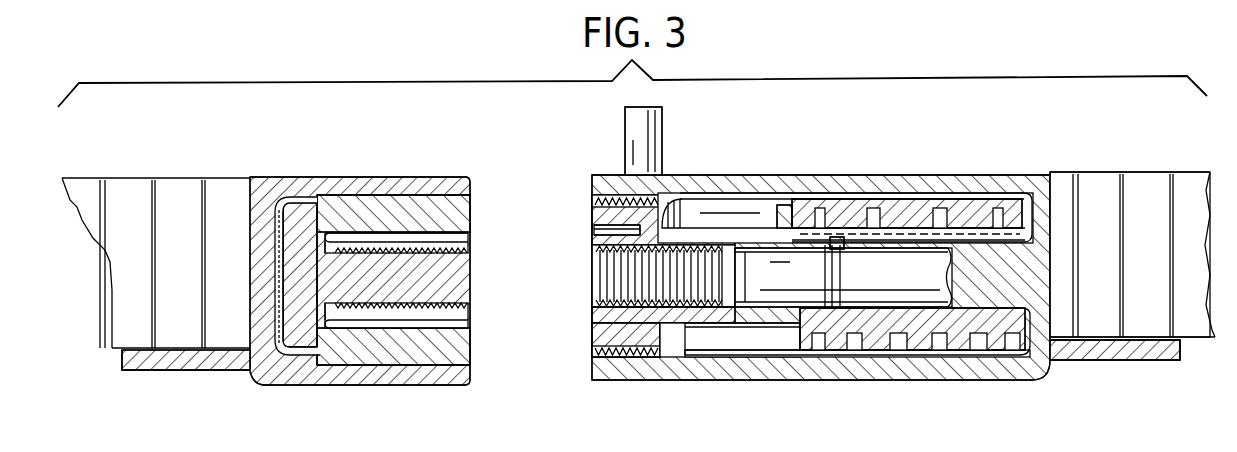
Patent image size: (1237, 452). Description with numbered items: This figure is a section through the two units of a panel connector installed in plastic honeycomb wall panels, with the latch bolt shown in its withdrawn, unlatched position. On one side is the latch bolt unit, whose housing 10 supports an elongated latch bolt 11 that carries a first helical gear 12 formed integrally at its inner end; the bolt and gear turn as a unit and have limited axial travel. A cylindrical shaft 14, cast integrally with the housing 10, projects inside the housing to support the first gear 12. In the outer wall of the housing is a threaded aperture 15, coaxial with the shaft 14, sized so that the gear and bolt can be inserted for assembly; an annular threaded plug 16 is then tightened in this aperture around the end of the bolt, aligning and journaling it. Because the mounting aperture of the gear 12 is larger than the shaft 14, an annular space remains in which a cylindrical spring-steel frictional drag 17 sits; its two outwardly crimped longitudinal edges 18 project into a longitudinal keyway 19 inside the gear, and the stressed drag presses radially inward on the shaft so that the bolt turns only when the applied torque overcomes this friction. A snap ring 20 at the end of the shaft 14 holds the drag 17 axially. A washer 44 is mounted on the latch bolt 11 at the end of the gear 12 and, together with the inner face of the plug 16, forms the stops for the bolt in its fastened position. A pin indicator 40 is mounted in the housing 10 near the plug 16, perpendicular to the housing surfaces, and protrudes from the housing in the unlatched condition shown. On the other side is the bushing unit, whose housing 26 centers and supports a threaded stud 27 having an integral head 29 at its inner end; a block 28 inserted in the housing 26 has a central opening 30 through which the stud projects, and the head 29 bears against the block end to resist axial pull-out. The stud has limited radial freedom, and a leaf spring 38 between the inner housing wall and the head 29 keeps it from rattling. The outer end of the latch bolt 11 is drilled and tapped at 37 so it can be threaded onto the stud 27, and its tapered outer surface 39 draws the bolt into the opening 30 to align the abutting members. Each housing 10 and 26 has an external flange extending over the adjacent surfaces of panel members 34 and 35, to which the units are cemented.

The housing 10 is at (807, 262).
The latch bolt 11 is at (655, 323).
The first helical gear 12 is at (818, 330).
The cylindrical shaft 14 is at (860, 290).
The threaded aperture 15 is at (605, 345).
The annular threaded plug 16 is at (600, 212).
The frictional drag 17 is at (978, 310).
The crimped longitudinal edges 18 is at (1002, 232).
The longitudinal keyway 19 is at (893, 228).
The snap ring 20 is at (838, 238).
The bushing housing 26 is at (313, 287).
The threaded stud 27 is at (460, 268).
The block 28 is at (458, 203).
The stud head 29 is at (305, 203).
The central opening 30 is at (455, 237).
The panel member 34 is at (168, 178).
The panel member 35 is at (1146, 170).
The drilled and tapped end 37 is at (608, 263).
The leaf spring 38 is at (278, 197).
The tapered outer surface 39 is at (635, 228).
The pin indicator 40 is at (652, 165).
The washer 44 is at (782, 205).